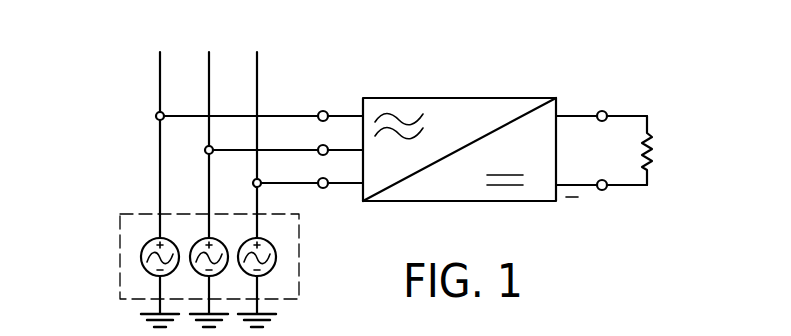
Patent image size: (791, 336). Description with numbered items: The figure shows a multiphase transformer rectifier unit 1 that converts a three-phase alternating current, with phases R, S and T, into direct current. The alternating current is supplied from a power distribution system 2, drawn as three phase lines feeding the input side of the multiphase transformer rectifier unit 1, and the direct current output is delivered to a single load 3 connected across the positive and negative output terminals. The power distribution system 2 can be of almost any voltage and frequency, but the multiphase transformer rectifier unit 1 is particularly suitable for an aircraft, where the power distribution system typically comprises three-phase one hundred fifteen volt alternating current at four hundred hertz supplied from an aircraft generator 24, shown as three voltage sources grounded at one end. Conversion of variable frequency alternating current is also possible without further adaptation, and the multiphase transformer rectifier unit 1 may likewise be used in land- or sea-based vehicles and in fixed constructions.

The multiphase transformer rectifier unit 1 is at (476, 97).
The power distribution system 2 is at (137, 186).
The load 3 is at (655, 152).
The aircraft generator 24 is at (118, 240).